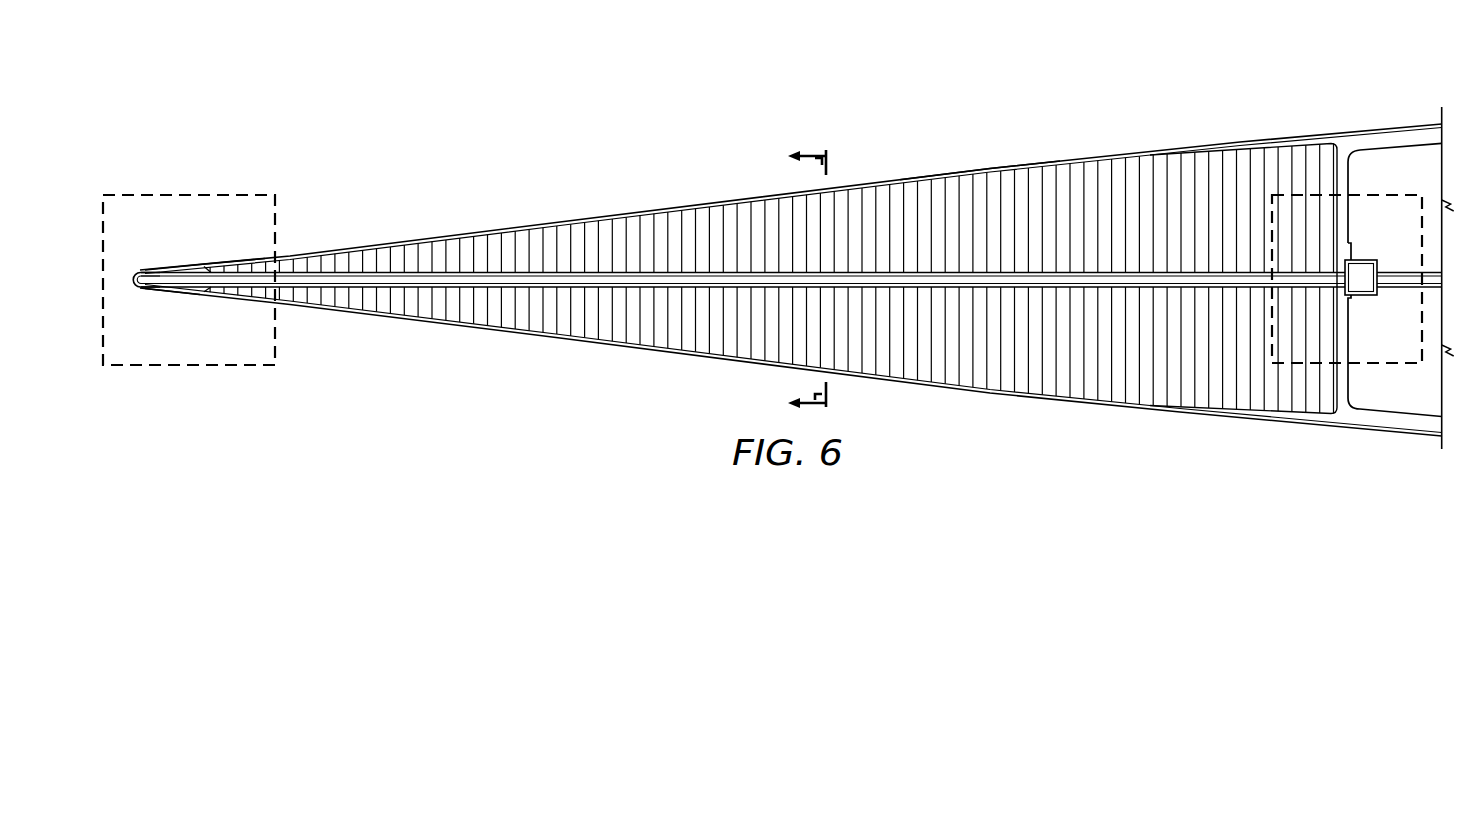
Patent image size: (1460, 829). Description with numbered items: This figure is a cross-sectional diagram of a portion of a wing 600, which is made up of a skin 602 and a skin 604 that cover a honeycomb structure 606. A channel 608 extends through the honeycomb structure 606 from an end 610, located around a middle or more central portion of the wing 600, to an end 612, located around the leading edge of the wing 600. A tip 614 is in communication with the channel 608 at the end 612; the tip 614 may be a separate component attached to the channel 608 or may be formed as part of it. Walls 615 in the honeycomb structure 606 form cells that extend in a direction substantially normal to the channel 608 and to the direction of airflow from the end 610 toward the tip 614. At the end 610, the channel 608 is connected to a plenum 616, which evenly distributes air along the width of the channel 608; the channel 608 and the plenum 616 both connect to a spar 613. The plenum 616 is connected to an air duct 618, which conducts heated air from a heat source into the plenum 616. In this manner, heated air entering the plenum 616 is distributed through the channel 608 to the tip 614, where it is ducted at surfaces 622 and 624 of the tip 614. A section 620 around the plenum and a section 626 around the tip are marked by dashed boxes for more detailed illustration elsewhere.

The wing 600 is at (929, 88).
The skin 602 is at (618, 207).
The skin 604 is at (616, 346).
The honeycomb structure 606 is at (1135, 433).
The channel 608 is at (415, 288).
The end 610 is at (1373, 130).
The end 612 is at (232, 262).
The spar 613 is at (1350, 174).
The tip 614 is at (130, 292).
The walls 615 is at (980, 163).
The plenum 616 is at (1362, 300).
The air duct 618 is at (1397, 262).
The section 620 is at (1376, 372).
The surface 622 is at (163, 268).
The surface 624 is at (168, 293).
The section 626 is at (189, 188).